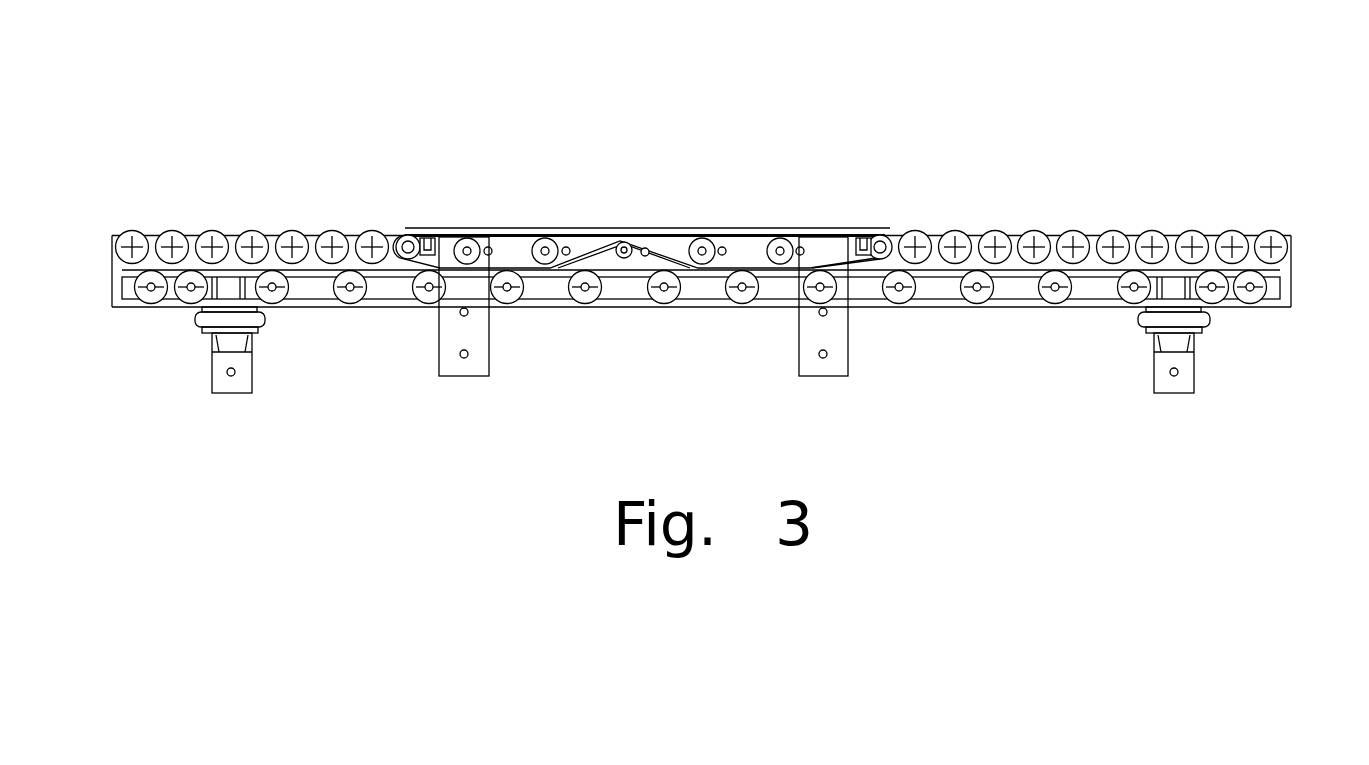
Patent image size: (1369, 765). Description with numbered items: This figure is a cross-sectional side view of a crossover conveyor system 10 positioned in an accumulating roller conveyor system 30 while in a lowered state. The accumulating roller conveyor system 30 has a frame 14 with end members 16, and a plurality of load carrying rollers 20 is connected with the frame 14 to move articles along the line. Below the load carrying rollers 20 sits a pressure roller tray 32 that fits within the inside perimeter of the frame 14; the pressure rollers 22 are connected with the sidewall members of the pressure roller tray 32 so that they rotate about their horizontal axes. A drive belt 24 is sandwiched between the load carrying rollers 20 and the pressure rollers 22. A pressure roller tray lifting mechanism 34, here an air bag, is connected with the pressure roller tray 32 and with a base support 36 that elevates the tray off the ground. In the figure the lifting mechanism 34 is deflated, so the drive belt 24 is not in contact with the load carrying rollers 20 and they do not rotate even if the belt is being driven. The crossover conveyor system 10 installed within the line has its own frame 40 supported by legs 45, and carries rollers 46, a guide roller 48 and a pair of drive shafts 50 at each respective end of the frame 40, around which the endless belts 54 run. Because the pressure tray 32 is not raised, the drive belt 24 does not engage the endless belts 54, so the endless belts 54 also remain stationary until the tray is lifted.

The crossover conveyor system 10 is at (666, 148).
The frame 14 is at (310, 236).
The end members 16 is at (112, 272).
The load carrying rollers 20 is at (212, 230).
The pressure rollers 22 is at (993, 290).
The drive belt 24 is at (388, 307).
The accumulating roller conveyor system 30 is at (268, 195).
The pressure roller tray 32 is at (1281, 288).
The pressure roller tray lifting mechanism 34 is at (265, 319).
The base support 36 is at (252, 371).
The frame 40 is at (427, 237).
The legs 45 is at (490, 332).
The rollers 46 is at (540, 238).
The guide roller 48 is at (618, 237).
The drive shafts 50 is at (403, 233).
The endless belts 54 is at (730, 228).